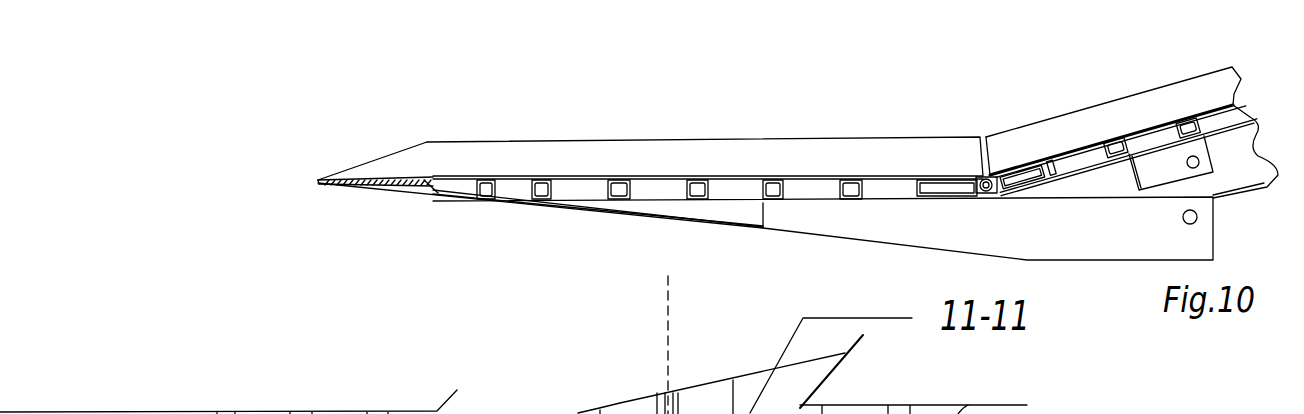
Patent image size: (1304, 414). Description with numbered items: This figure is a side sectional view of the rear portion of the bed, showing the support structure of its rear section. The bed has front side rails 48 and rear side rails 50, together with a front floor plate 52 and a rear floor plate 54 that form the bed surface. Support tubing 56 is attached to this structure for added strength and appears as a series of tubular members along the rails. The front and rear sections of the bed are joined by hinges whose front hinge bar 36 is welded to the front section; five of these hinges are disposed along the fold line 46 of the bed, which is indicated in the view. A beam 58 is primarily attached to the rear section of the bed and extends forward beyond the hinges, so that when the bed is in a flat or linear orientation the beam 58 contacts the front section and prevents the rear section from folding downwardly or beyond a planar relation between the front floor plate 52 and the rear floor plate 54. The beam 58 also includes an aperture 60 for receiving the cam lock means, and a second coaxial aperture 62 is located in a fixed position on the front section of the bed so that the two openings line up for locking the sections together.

The front hinge bar 36 is at (917, 186).
The fold line 46 is at (666, 362).
The front side rails 48 is at (1145, 89).
The rear side rails 50 is at (677, 142).
The front floor plate 52 is at (1220, 103).
The rear floor plate 54 is at (583, 177).
The support tubing 56 is at (619, 201).
The beam 58 is at (1112, 262).
The aperture 60 is at (1183, 218).
The second coaxial aperture 62 is at (1194, 168).